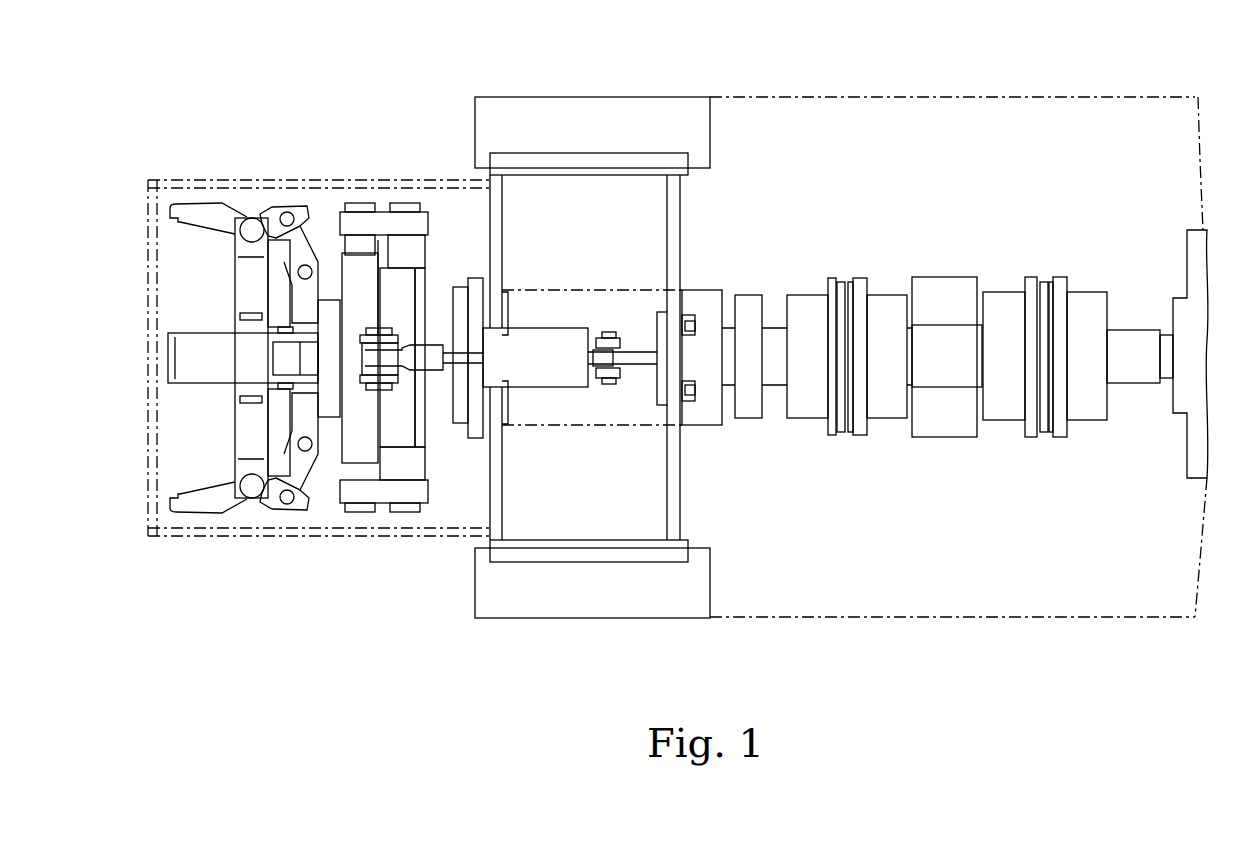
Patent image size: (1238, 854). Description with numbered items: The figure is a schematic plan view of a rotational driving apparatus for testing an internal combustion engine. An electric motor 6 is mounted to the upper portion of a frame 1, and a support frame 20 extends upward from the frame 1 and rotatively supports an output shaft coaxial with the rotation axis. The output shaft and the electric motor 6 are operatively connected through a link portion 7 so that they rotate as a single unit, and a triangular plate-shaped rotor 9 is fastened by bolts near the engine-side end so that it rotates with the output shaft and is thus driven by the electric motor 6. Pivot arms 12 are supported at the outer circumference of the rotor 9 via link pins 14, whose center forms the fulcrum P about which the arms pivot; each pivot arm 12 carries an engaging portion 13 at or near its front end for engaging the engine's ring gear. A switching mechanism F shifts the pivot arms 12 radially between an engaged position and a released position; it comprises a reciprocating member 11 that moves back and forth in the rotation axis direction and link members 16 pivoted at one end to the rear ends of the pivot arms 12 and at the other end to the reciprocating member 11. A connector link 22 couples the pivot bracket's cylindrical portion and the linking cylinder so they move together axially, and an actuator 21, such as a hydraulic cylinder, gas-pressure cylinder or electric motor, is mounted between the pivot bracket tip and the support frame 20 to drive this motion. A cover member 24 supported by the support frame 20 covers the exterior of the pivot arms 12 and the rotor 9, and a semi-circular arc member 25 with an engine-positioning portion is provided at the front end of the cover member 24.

The frame 1 is at (828, 83).
The electric motor 6 is at (1190, 280).
The link portion 7 is at (888, 252).
The rotor 9 is at (247, 293).
The reciprocating member 11 is at (332, 425).
The pivot arms 12 is at (214, 503).
The engaging portion 13 is at (172, 227).
The link pins 14 is at (252, 220).
The link members 16 is at (310, 242).
The support frame 20 is at (600, 562).
The actuator 21 is at (557, 378).
The connector link 22 is at (378, 490).
The cover member 24 is at (432, 545).
The semi-circular arc member 25 is at (148, 540).
The switching mechanism F is at (358, 170).